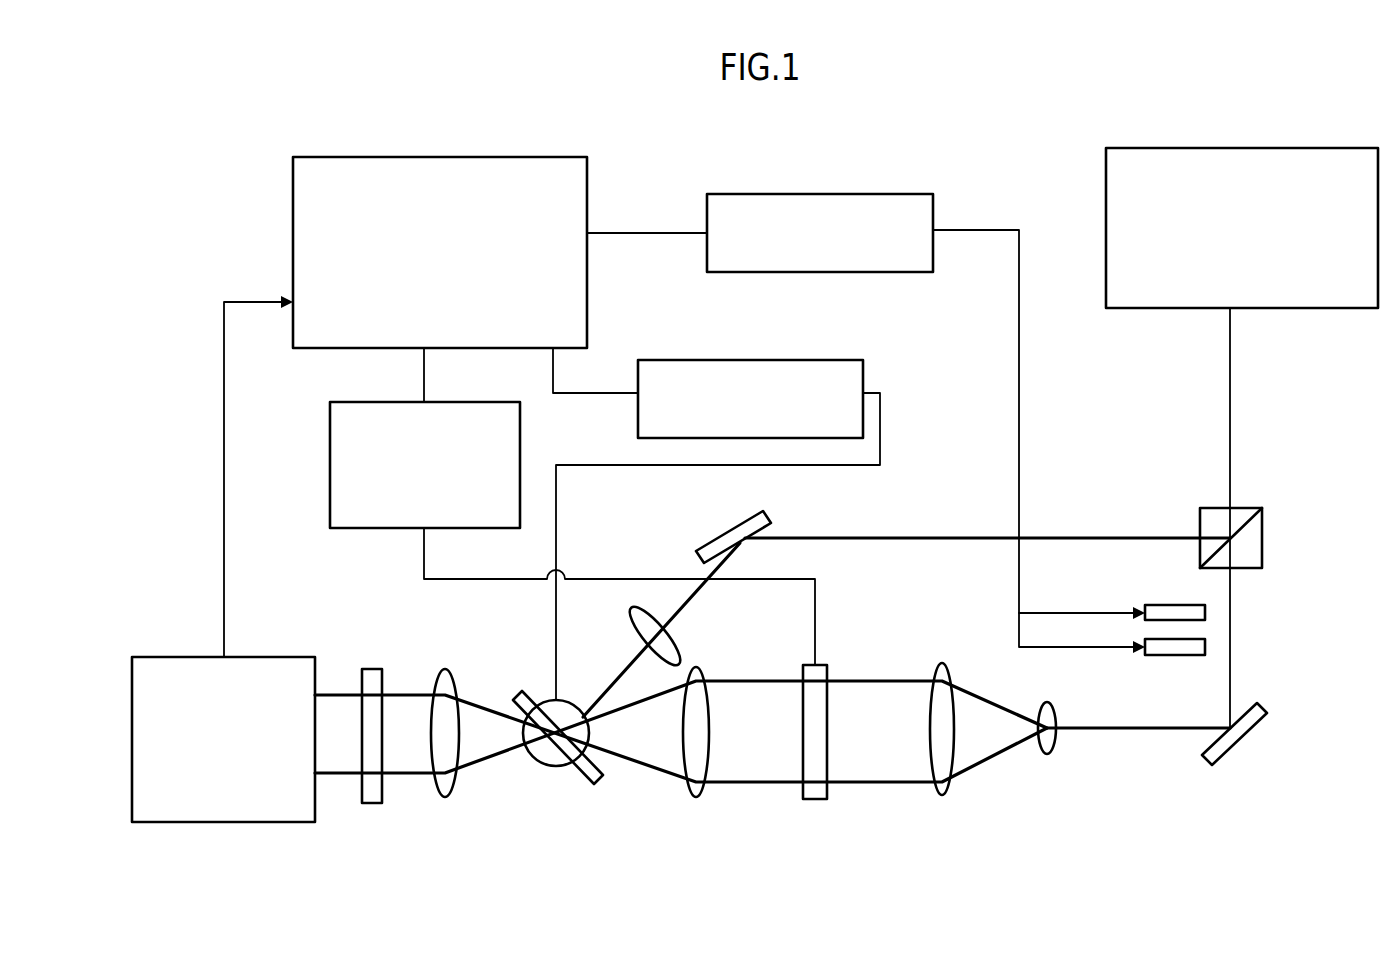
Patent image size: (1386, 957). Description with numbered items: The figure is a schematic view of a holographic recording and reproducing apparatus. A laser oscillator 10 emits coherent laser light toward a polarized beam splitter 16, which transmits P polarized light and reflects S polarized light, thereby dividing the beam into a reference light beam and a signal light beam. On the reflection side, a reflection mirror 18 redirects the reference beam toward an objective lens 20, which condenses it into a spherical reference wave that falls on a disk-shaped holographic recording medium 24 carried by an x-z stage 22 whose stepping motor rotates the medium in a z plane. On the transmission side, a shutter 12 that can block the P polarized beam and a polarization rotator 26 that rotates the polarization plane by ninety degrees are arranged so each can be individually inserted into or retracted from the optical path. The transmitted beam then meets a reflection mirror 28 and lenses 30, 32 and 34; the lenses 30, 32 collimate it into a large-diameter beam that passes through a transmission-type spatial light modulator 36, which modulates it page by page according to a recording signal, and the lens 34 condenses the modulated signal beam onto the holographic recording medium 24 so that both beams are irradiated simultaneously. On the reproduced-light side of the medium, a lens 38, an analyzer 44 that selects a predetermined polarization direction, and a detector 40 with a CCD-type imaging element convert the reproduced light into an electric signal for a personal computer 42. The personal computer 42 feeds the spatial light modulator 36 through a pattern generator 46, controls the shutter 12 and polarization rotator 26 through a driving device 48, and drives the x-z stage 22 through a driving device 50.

The laser oscillator 10 is at (1313, 148).
The shutter 12 is at (1168, 605).
The polarized beam splitter 16 is at (1262, 545).
The reflection mirror 18 is at (715, 546).
The objective lens 20 is at (676, 638).
The x-z stage 22 is at (531, 764).
The holographic recording medium 24 is at (590, 780).
The polarization rotator 26 is at (1165, 655).
The reflection mirror 28 is at (1241, 745).
The lens 30 is at (1046, 755).
The lens 32 is at (938, 796).
The lens 34 is at (694, 798).
The spatial light modulator 36 is at (815, 800).
The lens 38 is at (446, 798).
The detector 40 is at (228, 822).
The personal computer 42 is at (447, 165).
The analyzer 44 is at (372, 804).
The pattern generator 46 is at (363, 528).
The driving device 48 is at (880, 194).
The driving device 50 is at (823, 360).